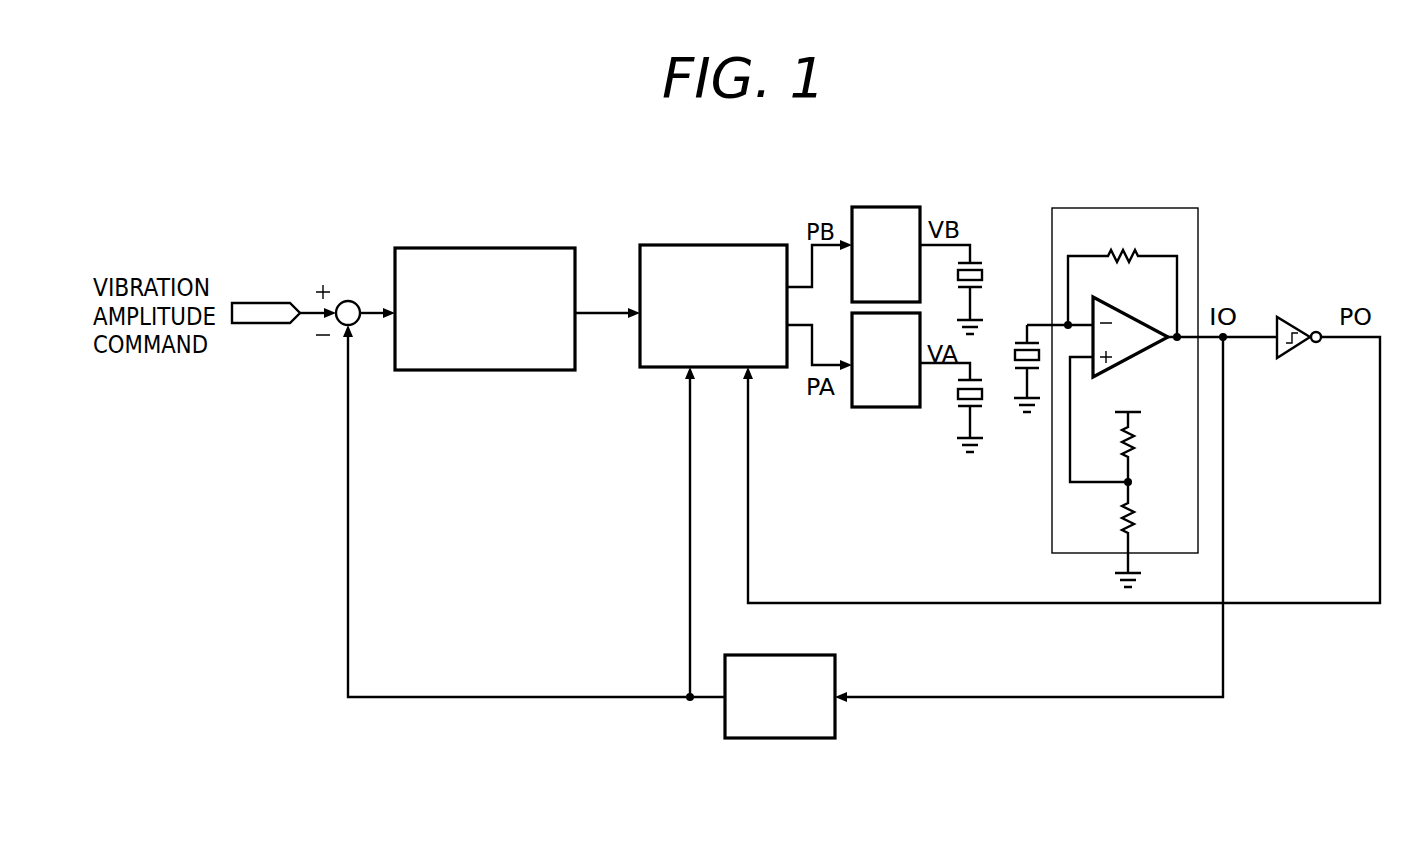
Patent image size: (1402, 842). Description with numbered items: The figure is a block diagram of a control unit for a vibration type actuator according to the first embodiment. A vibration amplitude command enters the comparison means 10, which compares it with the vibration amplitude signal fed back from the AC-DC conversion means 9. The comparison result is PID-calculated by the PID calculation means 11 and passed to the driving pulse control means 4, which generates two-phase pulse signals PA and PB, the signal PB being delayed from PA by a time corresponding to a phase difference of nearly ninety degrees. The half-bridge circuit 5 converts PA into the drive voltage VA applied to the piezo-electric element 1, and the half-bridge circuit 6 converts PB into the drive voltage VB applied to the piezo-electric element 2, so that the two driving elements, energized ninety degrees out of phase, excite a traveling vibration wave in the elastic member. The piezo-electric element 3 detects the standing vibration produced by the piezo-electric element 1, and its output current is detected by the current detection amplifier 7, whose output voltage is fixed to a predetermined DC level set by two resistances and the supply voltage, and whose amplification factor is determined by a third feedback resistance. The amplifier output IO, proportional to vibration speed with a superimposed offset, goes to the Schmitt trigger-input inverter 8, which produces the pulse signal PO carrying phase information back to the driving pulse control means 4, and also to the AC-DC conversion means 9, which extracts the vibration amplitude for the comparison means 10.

The piezo-electric element 1 is at (959, 395).
The piezo-electric element 2 is at (975, 265).
The piezo-electric element for detecting vibration 3 is at (1021, 343).
The driving pulse control means 4 is at (712, 245).
The half-bridge circuit 5 is at (890, 407).
The half-bridge circuit 6 is at (881, 207).
The current detection amplifier 7 is at (1135, 208).
The Schmitt trigger-input inverter 8 is at (1297, 322).
The AC-DC conversion means 9 is at (785, 740).
The comparison means 10 is at (349, 300).
The PID calculation means 11 is at (486, 248).